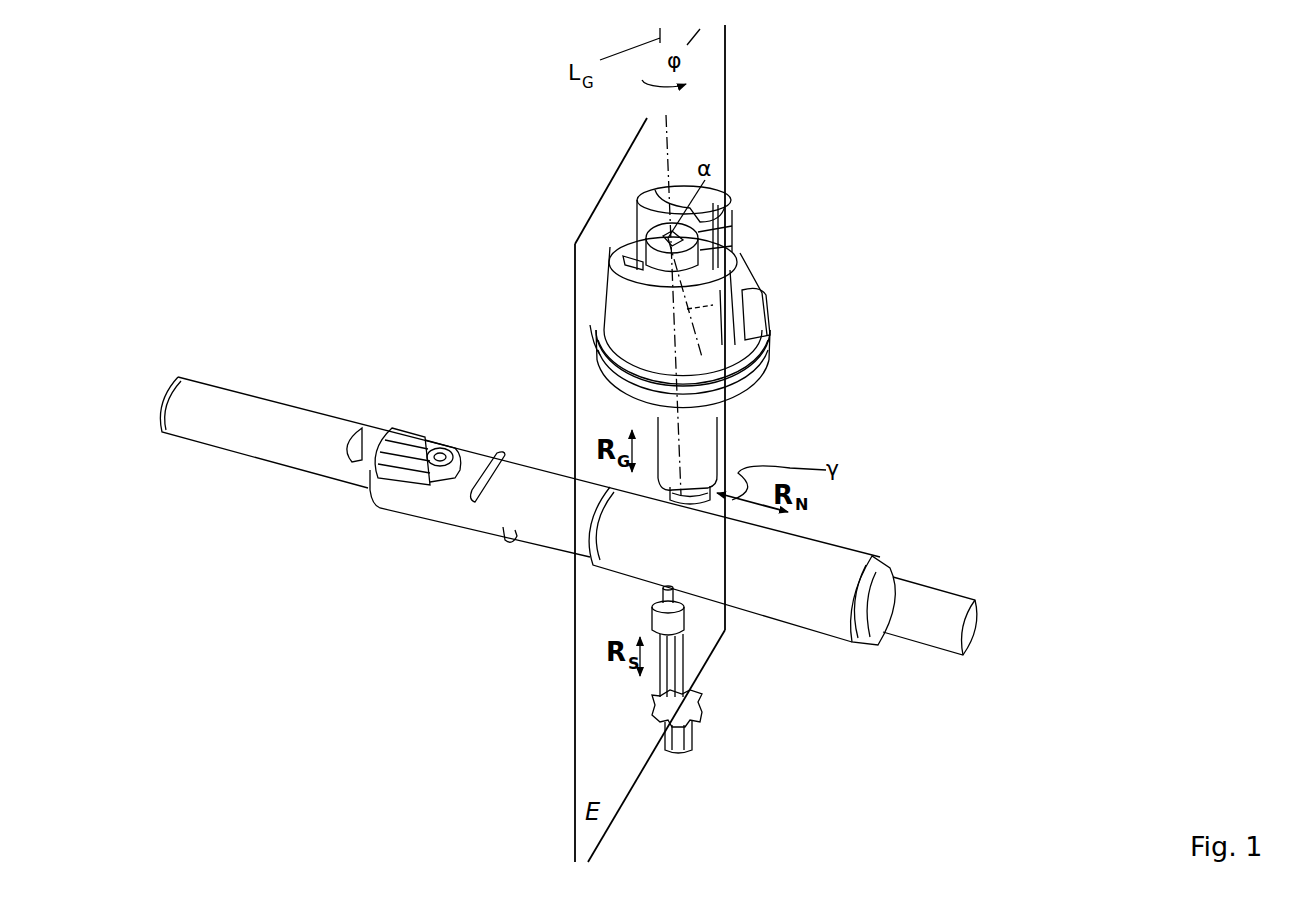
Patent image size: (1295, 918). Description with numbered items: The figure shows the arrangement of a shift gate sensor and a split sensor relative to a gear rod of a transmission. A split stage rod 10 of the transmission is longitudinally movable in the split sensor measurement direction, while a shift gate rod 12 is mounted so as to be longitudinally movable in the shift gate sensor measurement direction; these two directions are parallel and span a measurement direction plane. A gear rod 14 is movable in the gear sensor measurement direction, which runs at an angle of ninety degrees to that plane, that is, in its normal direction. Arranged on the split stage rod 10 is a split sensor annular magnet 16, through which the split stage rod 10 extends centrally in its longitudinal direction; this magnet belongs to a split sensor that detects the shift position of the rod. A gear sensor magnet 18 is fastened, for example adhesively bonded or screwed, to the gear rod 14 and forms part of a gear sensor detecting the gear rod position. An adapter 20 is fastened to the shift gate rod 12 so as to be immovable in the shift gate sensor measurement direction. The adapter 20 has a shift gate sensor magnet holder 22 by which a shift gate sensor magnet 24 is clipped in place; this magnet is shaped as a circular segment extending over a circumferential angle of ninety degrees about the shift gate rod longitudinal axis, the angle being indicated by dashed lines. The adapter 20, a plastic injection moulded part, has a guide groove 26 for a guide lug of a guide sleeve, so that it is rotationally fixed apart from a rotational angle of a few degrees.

The split stage rod 10 is at (678, 675).
The shift gate rod 12 is at (703, 448).
The gear rod 14 is at (815, 560).
The split sensor annular magnet 16 is at (677, 617).
The gear sensor magnet 18 is at (410, 475).
The adapter 20 is at (700, 238).
The shift gate sensor magnet holder 22 is at (763, 288).
The shift gate sensor magnet 24 is at (762, 338).
The guide groove 26 is at (576, 213).